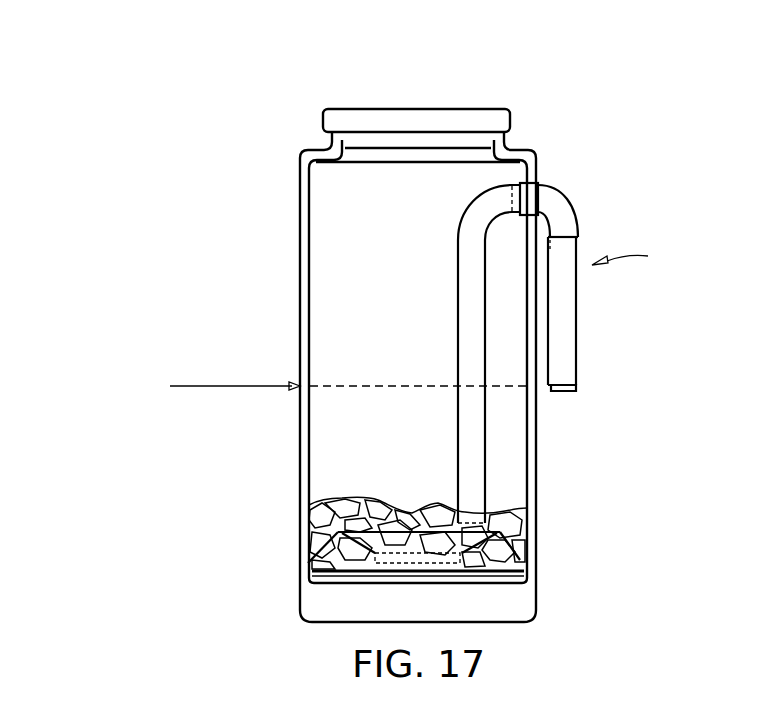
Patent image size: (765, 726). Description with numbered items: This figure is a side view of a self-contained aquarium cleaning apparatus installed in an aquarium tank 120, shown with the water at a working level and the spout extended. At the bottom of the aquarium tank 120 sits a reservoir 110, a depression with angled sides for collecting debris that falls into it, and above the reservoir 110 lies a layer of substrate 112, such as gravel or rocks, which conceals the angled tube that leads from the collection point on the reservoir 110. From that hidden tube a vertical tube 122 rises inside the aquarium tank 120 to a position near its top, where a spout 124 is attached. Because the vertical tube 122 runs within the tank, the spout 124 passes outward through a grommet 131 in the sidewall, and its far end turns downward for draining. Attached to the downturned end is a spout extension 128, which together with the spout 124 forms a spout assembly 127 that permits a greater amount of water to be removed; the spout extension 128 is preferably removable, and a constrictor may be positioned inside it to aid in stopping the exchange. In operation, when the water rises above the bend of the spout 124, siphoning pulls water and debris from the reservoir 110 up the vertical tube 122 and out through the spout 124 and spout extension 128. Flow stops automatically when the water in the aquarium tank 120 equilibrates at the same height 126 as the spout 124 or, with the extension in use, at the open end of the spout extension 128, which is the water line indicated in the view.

The reservoir 110 is at (375, 568).
The substrate 112 is at (515, 540).
The aquarium tank 120 is at (343, 271).
The vertical tube 122 is at (475, 347).
The spout 124 is at (575, 212).
The height 126 is at (570, 393).
The spout assembly 127 is at (641, 259).
The spout extension 128 is at (577, 300).
The grommet 131 is at (524, 183).